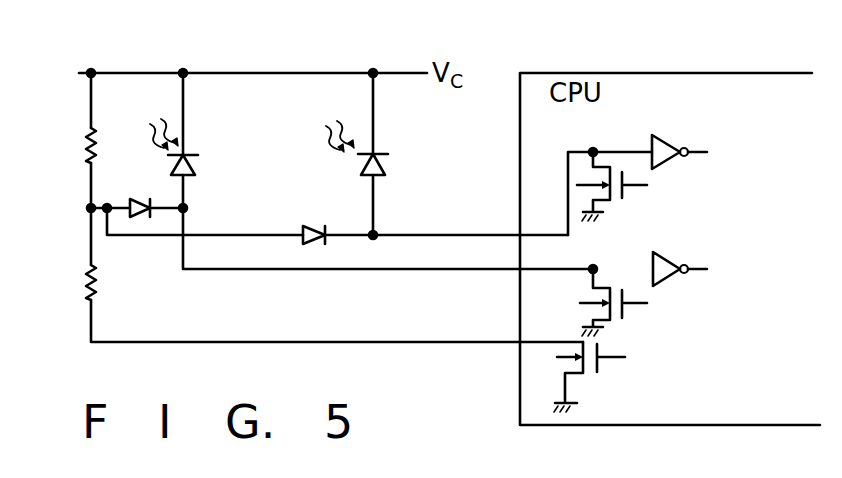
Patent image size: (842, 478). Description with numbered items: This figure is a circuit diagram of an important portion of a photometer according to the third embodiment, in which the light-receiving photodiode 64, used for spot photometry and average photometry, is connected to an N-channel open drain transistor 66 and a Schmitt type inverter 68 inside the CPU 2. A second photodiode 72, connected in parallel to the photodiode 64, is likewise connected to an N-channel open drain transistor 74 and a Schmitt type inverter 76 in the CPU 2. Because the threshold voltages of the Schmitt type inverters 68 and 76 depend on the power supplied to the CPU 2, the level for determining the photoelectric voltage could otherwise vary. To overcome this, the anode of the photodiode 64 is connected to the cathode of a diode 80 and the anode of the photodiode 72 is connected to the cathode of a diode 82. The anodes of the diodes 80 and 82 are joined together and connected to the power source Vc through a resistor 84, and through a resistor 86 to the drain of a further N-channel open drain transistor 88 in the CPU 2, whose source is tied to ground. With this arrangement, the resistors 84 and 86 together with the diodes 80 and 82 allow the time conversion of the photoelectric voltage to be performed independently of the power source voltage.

The CPU 2 is at (717, 73).
The photodiode 64 is at (388, 165).
The N-channel open drain transistor 66 is at (632, 195).
The Schmitt type inverter 68 is at (671, 146).
The photodiode 72 is at (198, 162).
The N-channel open drain transistor 74 is at (630, 312).
The Schmitt type inverter 76 is at (656, 258).
The diode 80 is at (314, 227).
The diode 82 is at (138, 207).
The resistor 84 is at (87, 140).
The resistor 86 is at (85, 282).
The N-channel open drain transistor 88 is at (604, 368).